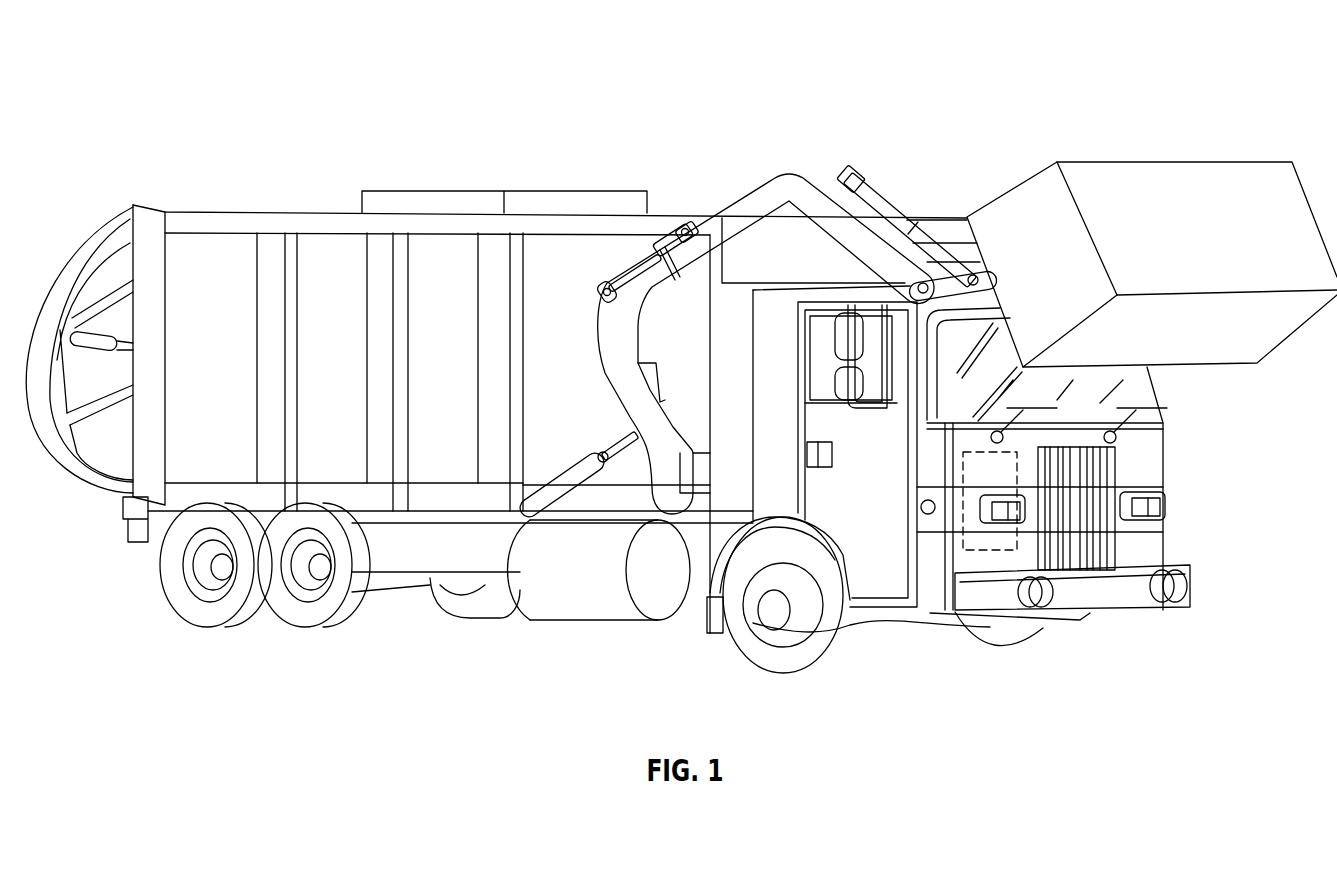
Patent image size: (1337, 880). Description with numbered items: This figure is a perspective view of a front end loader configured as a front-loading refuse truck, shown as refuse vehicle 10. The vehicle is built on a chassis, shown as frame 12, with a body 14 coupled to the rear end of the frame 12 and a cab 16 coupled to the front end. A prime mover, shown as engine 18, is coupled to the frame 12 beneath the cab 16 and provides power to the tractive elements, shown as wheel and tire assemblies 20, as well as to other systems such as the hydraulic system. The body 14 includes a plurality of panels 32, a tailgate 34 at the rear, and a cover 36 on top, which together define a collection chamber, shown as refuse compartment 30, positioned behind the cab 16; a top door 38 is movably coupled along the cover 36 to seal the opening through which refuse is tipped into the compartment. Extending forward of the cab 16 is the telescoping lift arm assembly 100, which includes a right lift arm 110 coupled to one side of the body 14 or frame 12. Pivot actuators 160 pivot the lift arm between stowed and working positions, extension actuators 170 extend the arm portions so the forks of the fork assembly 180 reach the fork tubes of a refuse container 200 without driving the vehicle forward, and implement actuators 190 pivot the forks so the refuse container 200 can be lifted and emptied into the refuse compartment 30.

The refuse vehicle 10 is at (95, 116).
The frame 12 is at (458, 560).
The body 14 is at (343, 220).
The cab 16 is at (923, 597).
The engine 18 is at (967, 550).
The wheel and tire assemblies 20 is at (813, 660).
The refuse compartment 30 is at (571, 182).
The panels 32 is at (210, 240).
The tailgate 34 is at (97, 253).
The cover 36 is at (287, 213).
The top door 38 is at (432, 190).
The telescoping lift arm assembly 100 is at (734, 192).
The right lift arm 110 is at (790, 187).
The pivot actuators 160 is at (543, 503).
The extension actuators 170 is at (637, 260).
The fork assembly 180 is at (949, 238).
The implement actuators 190 is at (875, 200).
The refuse container 200 is at (1193, 178).